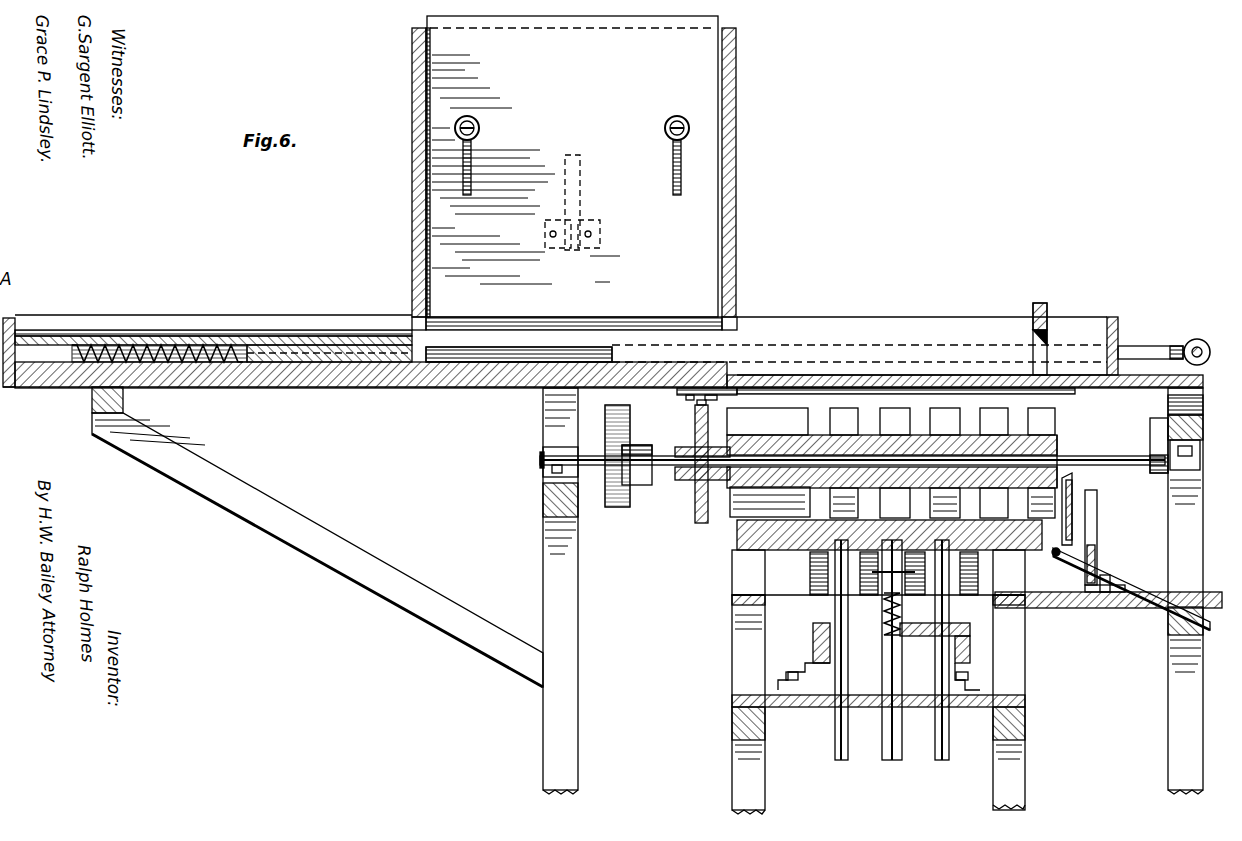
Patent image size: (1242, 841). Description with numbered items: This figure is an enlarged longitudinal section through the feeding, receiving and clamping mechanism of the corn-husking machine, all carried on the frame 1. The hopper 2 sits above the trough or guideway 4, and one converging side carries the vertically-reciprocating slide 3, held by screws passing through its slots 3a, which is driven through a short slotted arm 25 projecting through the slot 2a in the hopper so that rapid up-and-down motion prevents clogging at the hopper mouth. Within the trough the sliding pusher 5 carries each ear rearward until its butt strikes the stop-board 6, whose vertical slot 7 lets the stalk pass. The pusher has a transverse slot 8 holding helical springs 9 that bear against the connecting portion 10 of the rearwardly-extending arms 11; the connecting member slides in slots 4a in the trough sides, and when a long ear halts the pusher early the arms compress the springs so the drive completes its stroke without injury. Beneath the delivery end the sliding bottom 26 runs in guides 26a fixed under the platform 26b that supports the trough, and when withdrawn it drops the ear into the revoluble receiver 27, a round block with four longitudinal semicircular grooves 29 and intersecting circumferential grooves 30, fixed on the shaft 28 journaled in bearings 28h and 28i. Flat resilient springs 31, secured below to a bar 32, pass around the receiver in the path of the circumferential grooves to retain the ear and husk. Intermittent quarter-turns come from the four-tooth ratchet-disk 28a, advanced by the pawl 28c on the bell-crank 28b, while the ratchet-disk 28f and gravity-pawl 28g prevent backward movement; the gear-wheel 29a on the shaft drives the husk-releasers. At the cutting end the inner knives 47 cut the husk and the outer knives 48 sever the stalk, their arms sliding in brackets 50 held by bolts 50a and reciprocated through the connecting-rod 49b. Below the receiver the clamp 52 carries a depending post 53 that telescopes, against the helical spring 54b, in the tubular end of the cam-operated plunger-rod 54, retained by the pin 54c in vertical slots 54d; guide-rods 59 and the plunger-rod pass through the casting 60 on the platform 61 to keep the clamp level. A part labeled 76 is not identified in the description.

The frame 1 is at (523, 745).
The hopper 2 is at (738, 131).
The slot 2a is at (572, 155).
The vertically-reciprocating slide 3 is at (574, 173).
The slots 3a is at (472, 150).
The trough or guideway 4 is at (820, 320).
The slots 4a is at (535, 355).
The sliding pusher 5 is at (290, 345).
The stop-board 6 is at (1040, 303).
The vertical slot 7 is at (1042, 355).
The transverse slot 8 is at (168, 387).
The helical springs 9 is at (160, 345).
The connecting portion 10 is at (55, 387).
The rearwardly-extending arms 11 is at (455, 355).
The short arm 25 is at (572, 250).
The sliding bottom or floor 26 is at (900, 388).
The guides 26a is at (700, 388).
The platform 26b is at (590, 400).
The revoluble receiver 27 is at (1057, 441).
The shaft 28 is at (670, 470).
The ratchet-disk 28a is at (648, 445).
The bell-crank or bent lever 28b is at (612, 507).
The pawl 28c is at (628, 418).
The ratchet-disk 28f is at (1132, 460).
The gravity-pawl 28g is at (1203, 442).
The bearing 28h is at (548, 472).
The bearing 28i is at (1203, 462).
The semicircular grooves 29 is at (700, 548).
The gear-wheel 29a is at (700, 505).
The circumferential grooves 30 is at (1018, 408).
The flat resilient springs 31 is at (812, 567).
The bar 32 is at (795, 595).
The inner knives 47 is at (1062, 525).
The outer knives 48 is at (1073, 515).
The connecting-rod 49b is at (1097, 535).
The brackets 50 is at (1070, 592).
The bolts 50a is at (1105, 592).
The clamp 52 is at (740, 540).
The depending post 53 is at (882, 600).
The plunger-rod 54 is at (886, 735).
The helical spring 54b is at (878, 650).
The pin 54c is at (830, 630).
The vertical slots 54d is at (905, 585).
The guide-rods 59 is at (835, 723).
The casting 60 is at (1025, 655).
The platform 61 is at (775, 707).
The brace 76 is at (1140, 578).